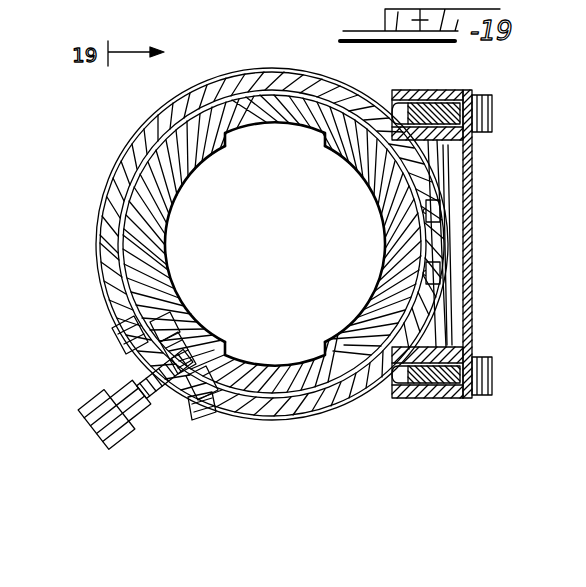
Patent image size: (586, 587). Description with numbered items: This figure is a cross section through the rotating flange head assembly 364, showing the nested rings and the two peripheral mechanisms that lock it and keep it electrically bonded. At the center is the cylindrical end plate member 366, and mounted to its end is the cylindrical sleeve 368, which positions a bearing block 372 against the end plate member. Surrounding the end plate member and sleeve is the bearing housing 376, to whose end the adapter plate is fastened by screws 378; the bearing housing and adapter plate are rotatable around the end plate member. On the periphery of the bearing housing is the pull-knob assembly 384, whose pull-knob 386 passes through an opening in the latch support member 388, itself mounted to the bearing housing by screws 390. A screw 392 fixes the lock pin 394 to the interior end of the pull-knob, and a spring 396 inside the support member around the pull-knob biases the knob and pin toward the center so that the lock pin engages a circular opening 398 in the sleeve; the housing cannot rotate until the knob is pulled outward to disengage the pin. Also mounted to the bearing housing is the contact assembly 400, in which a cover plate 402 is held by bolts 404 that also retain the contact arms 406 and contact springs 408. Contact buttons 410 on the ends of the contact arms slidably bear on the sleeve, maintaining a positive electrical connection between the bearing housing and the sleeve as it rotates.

The rotating flange head assembly 364 is at (82, 9).
The cylindrical end plate member 366 is at (170, 213).
The cylindrical sleeve 368 is at (127, 247).
The bearing block 372 is at (28, 22).
The bearing housing 376 is at (317, 91).
The screws 378 is at (238, 0).
The pull-knob assembly 384 is at (100, 440).
The pull-knob 386 is at (133, 423).
The latch support member 388 is at (200, 413).
The screws 390 is at (125, 355).
The screw 392 is at (173, 340).
The lock pin 394 is at (205, 357).
The spring 396 is at (130, 378).
The circular opening 398 is at (180, 337).
The contact assembly 400 is at (488, 303).
The cover plate 402 is at (472, 240).
The bolts 404 is at (493, 110).
The contact arms 406 is at (433, 165).
The contact springs 408 is at (447, 185).
The contact buttons 410 is at (430, 213).